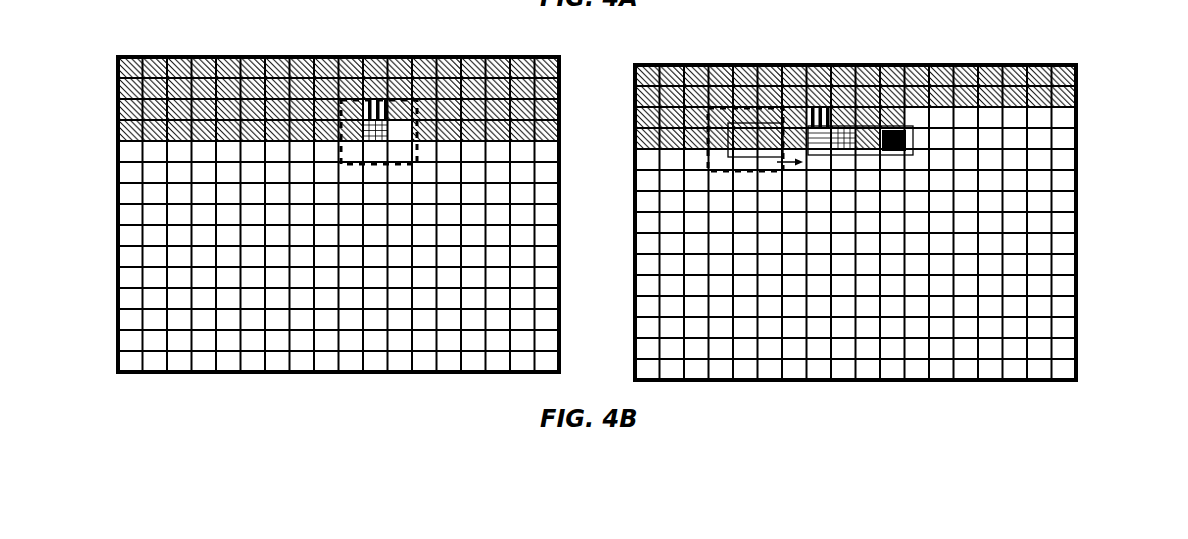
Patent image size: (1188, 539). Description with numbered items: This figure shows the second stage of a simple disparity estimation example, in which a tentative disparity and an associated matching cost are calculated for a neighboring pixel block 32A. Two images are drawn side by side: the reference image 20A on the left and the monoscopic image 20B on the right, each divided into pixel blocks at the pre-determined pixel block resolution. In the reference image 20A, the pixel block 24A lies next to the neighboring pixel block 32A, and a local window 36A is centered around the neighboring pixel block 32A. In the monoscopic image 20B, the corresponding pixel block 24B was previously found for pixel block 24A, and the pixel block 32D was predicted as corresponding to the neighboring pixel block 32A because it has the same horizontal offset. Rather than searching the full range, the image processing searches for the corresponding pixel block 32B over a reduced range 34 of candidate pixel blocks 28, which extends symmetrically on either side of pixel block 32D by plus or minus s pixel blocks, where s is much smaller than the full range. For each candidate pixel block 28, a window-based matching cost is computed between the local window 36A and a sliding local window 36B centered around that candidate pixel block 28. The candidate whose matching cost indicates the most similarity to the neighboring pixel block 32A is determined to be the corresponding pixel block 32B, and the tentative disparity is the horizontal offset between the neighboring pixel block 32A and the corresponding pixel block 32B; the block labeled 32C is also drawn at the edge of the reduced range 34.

The reference image 20A is at (118, 318).
The monoscopic image 20B is at (1078, 328).
The local window 36A is at (341, 107).
The sliding local window 36B is at (708, 114).
The pixel block 24A is at (385, 108).
The corresponding pixel block 24B is at (810, 108).
The neighboring pixel block 32A is at (366, 124).
The corresponding pixel block 32B is at (852, 132).
The positive sample block 32C is at (908, 137).
The predicted pixel block 32D is at (740, 123).
The candidate pixel blocks 28 is at (870, 151).
The reduced range 34 is at (843, 152).